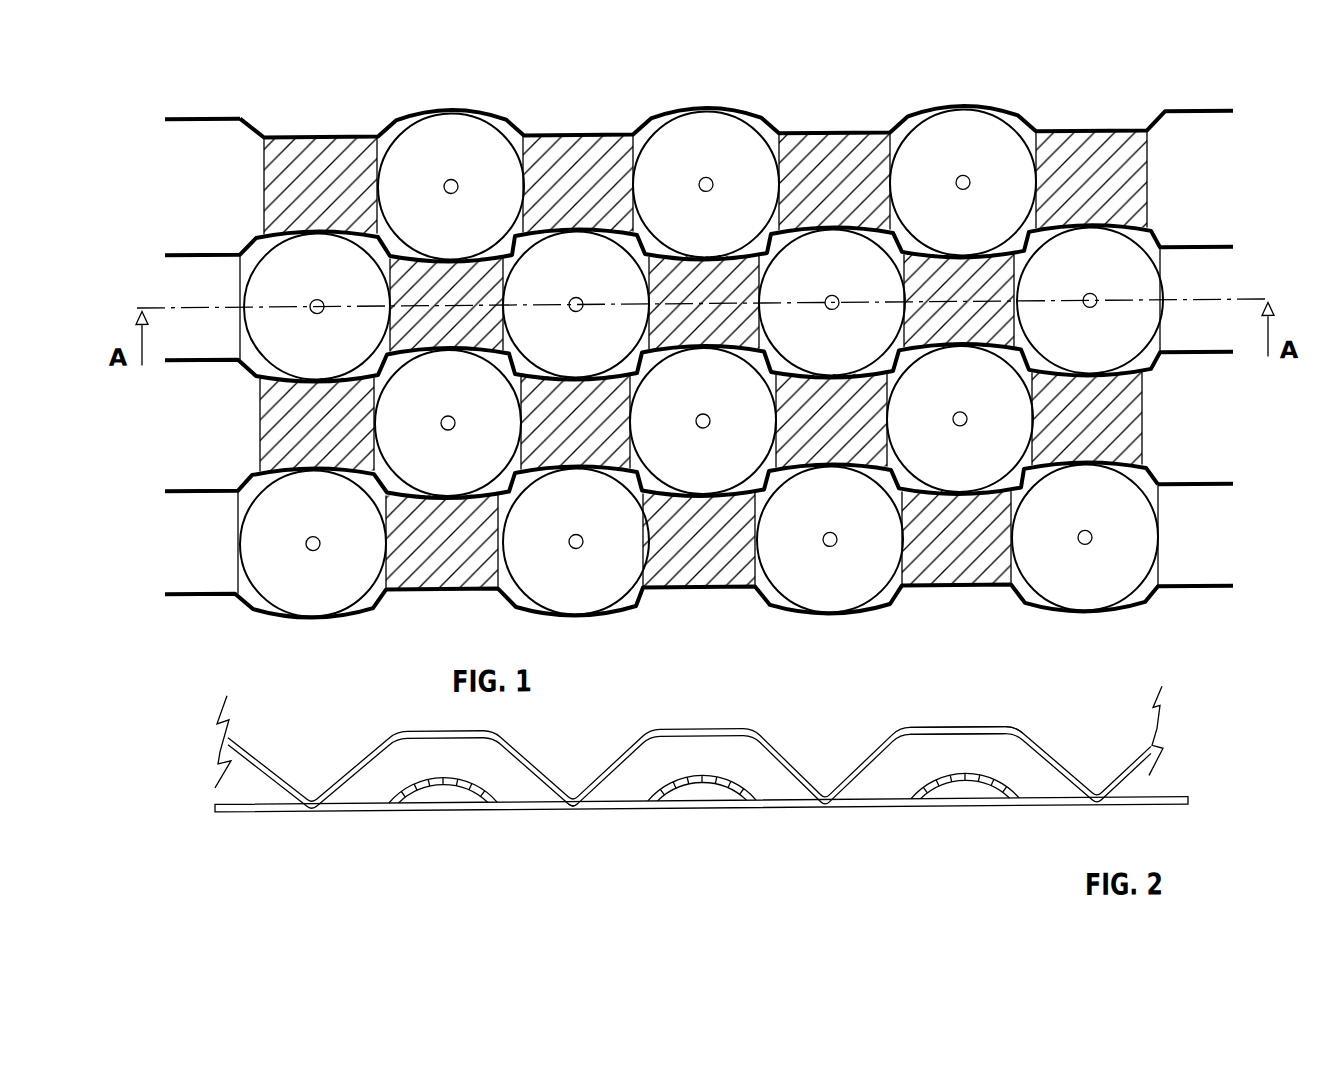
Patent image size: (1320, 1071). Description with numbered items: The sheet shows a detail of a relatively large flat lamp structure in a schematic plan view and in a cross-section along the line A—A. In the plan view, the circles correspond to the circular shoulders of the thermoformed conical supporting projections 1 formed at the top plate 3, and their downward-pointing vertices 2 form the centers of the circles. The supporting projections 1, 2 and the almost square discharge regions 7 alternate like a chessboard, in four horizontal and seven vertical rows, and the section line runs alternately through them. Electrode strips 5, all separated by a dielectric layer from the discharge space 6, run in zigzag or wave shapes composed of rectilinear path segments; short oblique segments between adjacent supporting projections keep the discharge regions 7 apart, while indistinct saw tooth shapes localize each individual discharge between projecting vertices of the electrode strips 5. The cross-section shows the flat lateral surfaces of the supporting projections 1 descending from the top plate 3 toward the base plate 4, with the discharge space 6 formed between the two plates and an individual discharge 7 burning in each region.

In FIG. 1, the supporting projection 1 is at (400, 128).
In FIG. 2, the supporting projection 1 is at (1019, 727).
In FIG. 1, the supporting projection vertex 2 is at (706, 178).
In FIG. 2, the supporting projection vertex 2 is at (573, 802).
In FIG. 2, the top plate 3 is at (352, 745).
In FIG. 2, the base plate 4 is at (858, 809).
In FIG. 1, the electrode strip 5 is at (1207, 486).
In FIG. 2, the discharge space 6 is at (962, 754).
In FIG. 1, the discharge region 7 is at (698, 548).
In FIG. 2, the discharge region 7 is at (443, 785).